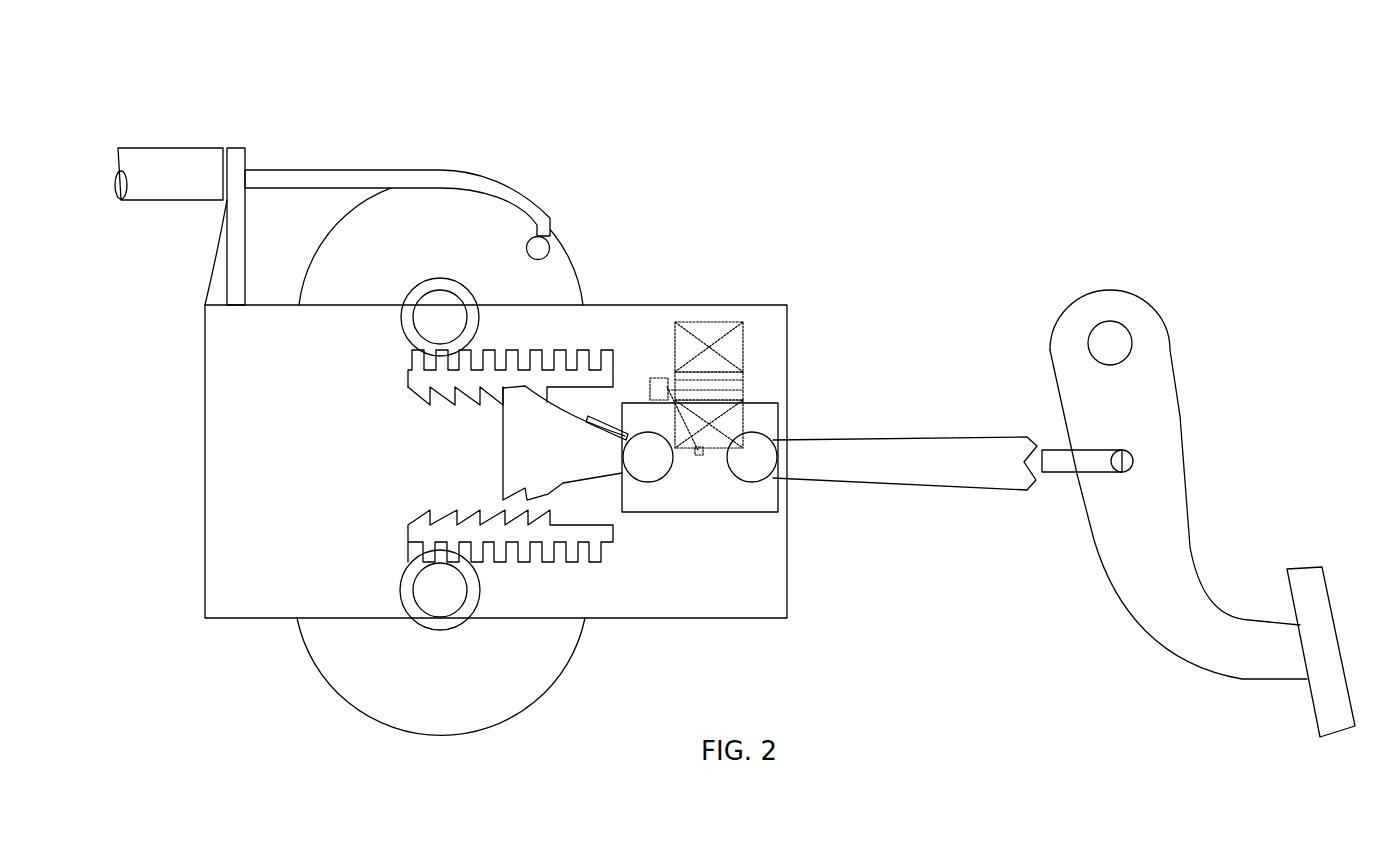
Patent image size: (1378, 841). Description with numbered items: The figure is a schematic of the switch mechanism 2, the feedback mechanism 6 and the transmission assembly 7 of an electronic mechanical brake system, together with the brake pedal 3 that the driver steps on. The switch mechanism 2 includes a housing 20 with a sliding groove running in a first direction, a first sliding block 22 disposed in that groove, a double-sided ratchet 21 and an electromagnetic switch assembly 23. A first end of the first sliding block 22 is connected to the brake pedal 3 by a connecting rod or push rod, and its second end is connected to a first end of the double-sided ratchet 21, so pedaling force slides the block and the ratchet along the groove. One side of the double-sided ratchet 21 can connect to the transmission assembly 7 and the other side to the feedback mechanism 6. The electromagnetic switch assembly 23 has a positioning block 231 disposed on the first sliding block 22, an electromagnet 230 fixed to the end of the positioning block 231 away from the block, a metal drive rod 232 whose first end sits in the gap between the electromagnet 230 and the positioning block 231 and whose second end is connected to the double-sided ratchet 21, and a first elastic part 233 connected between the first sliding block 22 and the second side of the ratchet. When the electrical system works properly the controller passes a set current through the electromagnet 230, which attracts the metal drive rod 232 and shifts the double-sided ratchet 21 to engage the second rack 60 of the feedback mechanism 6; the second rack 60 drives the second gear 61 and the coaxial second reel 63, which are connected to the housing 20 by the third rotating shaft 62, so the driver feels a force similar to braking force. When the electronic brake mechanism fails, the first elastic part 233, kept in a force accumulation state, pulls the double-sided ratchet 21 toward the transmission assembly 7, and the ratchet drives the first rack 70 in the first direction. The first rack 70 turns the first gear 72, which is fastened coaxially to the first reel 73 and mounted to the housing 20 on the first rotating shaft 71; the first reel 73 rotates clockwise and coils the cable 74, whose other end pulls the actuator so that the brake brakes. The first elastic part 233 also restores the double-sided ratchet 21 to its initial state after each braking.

The switch mechanism 2 is at (823, 199).
The housing 20 is at (540, 338).
The double-sided ratchet 21 is at (572, 420).
The first sliding block 22 is at (766, 415).
The electromagnetic switch assembly 23 is at (638, 246).
The electromagnet 230 is at (703, 350).
The positioning block 231 is at (730, 405).
The metal drive rod 232 is at (658, 377).
The first elastic part 233 is at (614, 422).
The brake pedal 3 is at (1167, 441).
The feedback mechanism 6 is at (452, 468).
The second rack 60 is at (475, 533).
The second gear 61 is at (447, 580).
The third rotating shaft 62 is at (428, 583).
The second reel 63 is at (395, 643).
The transmission assembly 7 is at (360, 124).
The first rack 70 is at (483, 387).
The first rotating shaft 71 is at (445, 325).
The first gear 72 is at (410, 303).
The first reel 73 is at (372, 243).
The cable 74 is at (347, 187).